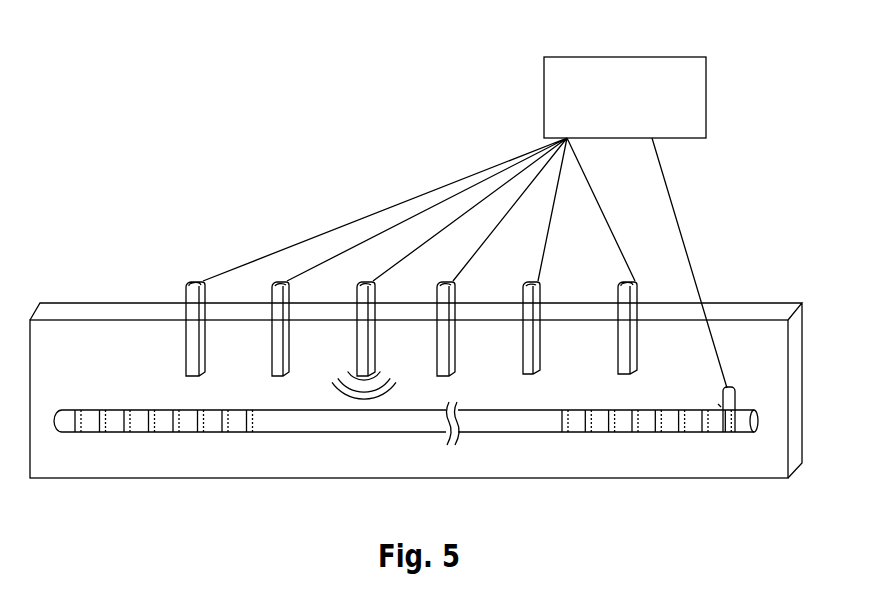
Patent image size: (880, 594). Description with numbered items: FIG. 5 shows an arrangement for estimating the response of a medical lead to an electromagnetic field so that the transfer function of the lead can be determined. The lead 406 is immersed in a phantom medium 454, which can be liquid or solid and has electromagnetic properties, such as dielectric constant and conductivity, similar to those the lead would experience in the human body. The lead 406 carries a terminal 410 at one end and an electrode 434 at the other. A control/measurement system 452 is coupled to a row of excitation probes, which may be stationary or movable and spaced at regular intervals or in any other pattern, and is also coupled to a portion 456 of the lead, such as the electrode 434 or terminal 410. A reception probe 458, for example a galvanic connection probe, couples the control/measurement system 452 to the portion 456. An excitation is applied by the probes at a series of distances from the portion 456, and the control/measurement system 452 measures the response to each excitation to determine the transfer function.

The lead 406 is at (177, 373).
The terminal 410 is at (258, 440).
The electrode 434 is at (737, 440).
The control/measurement system 452 is at (706, 77).
The phantom medium 454 is at (757, 303).
The portion of the lead 456 is at (721, 407).
The reception probe 458 is at (735, 392).